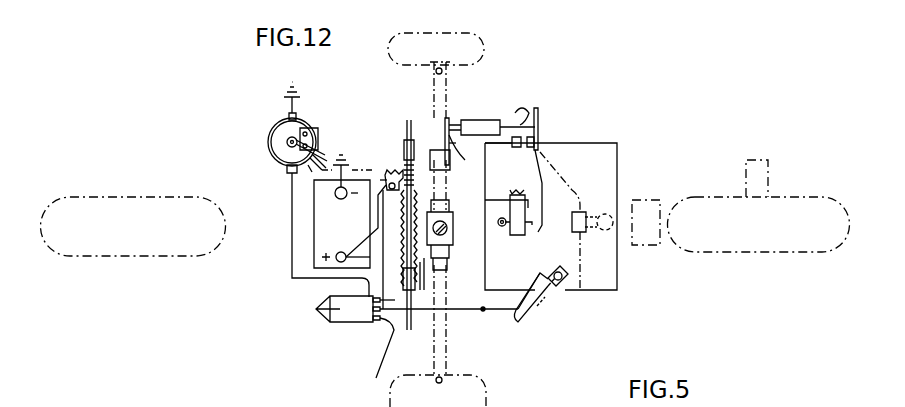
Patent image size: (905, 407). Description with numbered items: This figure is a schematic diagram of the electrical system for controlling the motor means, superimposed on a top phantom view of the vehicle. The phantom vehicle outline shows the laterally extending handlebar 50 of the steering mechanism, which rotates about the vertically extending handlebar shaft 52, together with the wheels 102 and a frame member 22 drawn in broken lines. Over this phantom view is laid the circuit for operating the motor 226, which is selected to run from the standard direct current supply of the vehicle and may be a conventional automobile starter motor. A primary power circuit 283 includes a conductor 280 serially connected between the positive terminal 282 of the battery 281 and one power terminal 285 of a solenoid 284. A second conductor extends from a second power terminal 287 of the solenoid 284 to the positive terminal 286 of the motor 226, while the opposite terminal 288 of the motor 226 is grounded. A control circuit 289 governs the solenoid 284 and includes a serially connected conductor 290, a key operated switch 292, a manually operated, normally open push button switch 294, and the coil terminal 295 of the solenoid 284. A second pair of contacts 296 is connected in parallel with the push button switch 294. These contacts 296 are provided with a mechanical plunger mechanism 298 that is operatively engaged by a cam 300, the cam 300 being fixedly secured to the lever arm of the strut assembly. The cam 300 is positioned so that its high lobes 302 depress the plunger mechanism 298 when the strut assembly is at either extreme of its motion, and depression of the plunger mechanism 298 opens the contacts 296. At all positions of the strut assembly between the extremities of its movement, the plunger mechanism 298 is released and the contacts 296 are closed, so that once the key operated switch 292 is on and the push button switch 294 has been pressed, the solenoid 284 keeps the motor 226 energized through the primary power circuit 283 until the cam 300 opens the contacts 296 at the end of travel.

The frame member 22 is at (866, 221).
The handlebar 50 is at (540, 310).
The handlebar shaft 52 is at (618, 204).
The wheel 102 is at (487, 47).
The motor 226 is at (272, 130).
The conductor 280 is at (376, 366).
The battery 281 is at (320, 237).
The positive terminal 282 is at (335, 256).
The primary power circuit 283 is at (389, 264).
The solenoid 284 is at (325, 309).
The power terminal 285 is at (348, 322).
The positive terminal 286 is at (285, 170).
The second power terminal 287 is at (366, 321).
The opposite terminal 288 is at (298, 116).
The control circuit 289 is at (383, 176).
The conductor 290 is at (453, 230).
The key operated switch 292 is at (525, 232).
The push button switch 294 is at (566, 290).
The coil terminal 295 is at (360, 286).
The contacts 296 is at (541, 142).
The plunger mechanism 298 is at (480, 120).
The cam 300 is at (448, 118).
The high lobes 302 is at (456, 140).